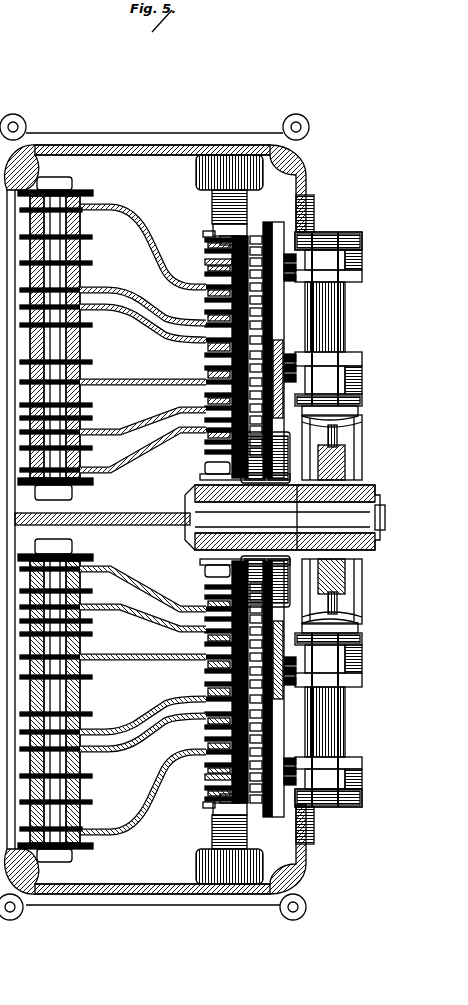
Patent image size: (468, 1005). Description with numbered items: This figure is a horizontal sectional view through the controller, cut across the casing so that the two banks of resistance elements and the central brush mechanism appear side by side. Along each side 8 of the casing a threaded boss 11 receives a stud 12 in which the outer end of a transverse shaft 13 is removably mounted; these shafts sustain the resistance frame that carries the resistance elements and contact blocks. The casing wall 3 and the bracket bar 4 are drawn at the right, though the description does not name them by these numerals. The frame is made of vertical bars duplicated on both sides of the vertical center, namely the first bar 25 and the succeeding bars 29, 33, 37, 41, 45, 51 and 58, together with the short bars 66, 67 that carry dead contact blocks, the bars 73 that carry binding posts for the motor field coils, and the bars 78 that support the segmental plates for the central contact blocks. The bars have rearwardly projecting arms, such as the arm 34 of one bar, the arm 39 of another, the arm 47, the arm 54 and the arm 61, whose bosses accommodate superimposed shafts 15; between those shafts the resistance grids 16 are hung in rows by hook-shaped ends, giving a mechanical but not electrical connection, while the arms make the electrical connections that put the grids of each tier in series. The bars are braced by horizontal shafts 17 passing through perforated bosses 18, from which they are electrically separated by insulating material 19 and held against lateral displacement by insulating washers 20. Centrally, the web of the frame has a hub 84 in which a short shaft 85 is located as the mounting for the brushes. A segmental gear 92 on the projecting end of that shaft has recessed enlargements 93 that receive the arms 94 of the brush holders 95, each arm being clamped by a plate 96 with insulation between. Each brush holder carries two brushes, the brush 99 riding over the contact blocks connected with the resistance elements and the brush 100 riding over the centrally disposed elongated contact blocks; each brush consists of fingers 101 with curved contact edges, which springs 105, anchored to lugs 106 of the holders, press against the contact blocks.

The casing 3 is at (300, 845).
The bracket bar 4 is at (315, 212).
The side of the casing 8 is at (152, 143).
The threaded boss 11 is at (196, 167).
The stud 12 is at (200, 836).
The transverse shaft 13 is at (240, 520).
The superimposed shaft 15 is at (62, 519).
The resistance grid 16 is at (78, 262).
The horizontal shaft 17 is at (203, 226).
The perforated boss 18 is at (204, 240).
The insulating material 19 is at (244, 520).
The insulating washer 20 is at (204, 251).
The first vertical bar 25 is at (171, 519).
The vertical bar 29 is at (212, 519).
The vertical bar 33 is at (211, 516).
The arm 34 is at (143, 525).
The vertical bar 37 is at (210, 519).
The arm 39 is at (143, 519).
The vertical bar 41 is at (222, 519).
The vertical bar 45 is at (210, 520).
The arm 47 is at (145, 379).
The vertical bar 51 is at (210, 518).
The arm 54 is at (150, 423).
The bar 58 is at (212, 516).
The arm 61 is at (150, 465).
The short bar 66 is at (204, 262).
The short bar 67 is at (268, 222).
The vertical bar 73 is at (222, 517).
The vertical bar 78 is at (222, 518).
The hub 84 is at (205, 478).
The short shaft 85 is at (185, 535).
The segmental gear 92 is at (362, 452).
The recessed enlargement 93 is at (332, 605).
The arm 94 is at (350, 411).
The brush holder 95 is at (345, 318).
The plate 96 is at (346, 462).
The brush 99 is at (278, 519).
The brush 100 is at (286, 524).
The finger 101 is at (335, 519).
The spring 105 is at (366, 514).
The lug 106 is at (360, 234).